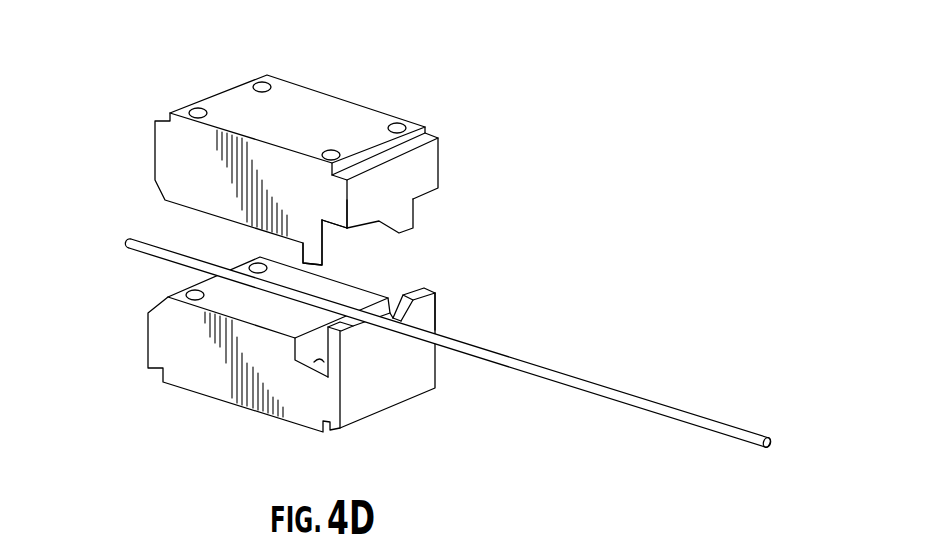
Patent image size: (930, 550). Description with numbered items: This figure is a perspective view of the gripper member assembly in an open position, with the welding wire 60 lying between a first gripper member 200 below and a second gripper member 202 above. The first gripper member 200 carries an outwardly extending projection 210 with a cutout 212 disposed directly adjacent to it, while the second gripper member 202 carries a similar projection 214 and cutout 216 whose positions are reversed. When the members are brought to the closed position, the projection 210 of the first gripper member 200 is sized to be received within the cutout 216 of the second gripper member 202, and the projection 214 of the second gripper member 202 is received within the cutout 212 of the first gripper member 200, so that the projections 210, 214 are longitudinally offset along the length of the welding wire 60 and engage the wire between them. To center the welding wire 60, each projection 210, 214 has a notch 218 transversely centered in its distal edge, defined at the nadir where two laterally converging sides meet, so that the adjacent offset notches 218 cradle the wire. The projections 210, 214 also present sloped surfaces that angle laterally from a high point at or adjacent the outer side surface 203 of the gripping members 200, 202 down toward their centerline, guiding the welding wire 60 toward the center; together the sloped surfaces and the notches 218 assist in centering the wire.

The welding wire 60 is at (783, 425).
The first gripper member 200 is at (137, 369).
The second gripper member 202 is at (203, 132).
The outer side surface 203 is at (293, 223).
The projection 210 is at (339, 379).
The cutout 212 is at (300, 364).
The projection 214 is at (344, 252).
The cutout 216 is at (428, 200).
The notch 218 is at (400, 308).